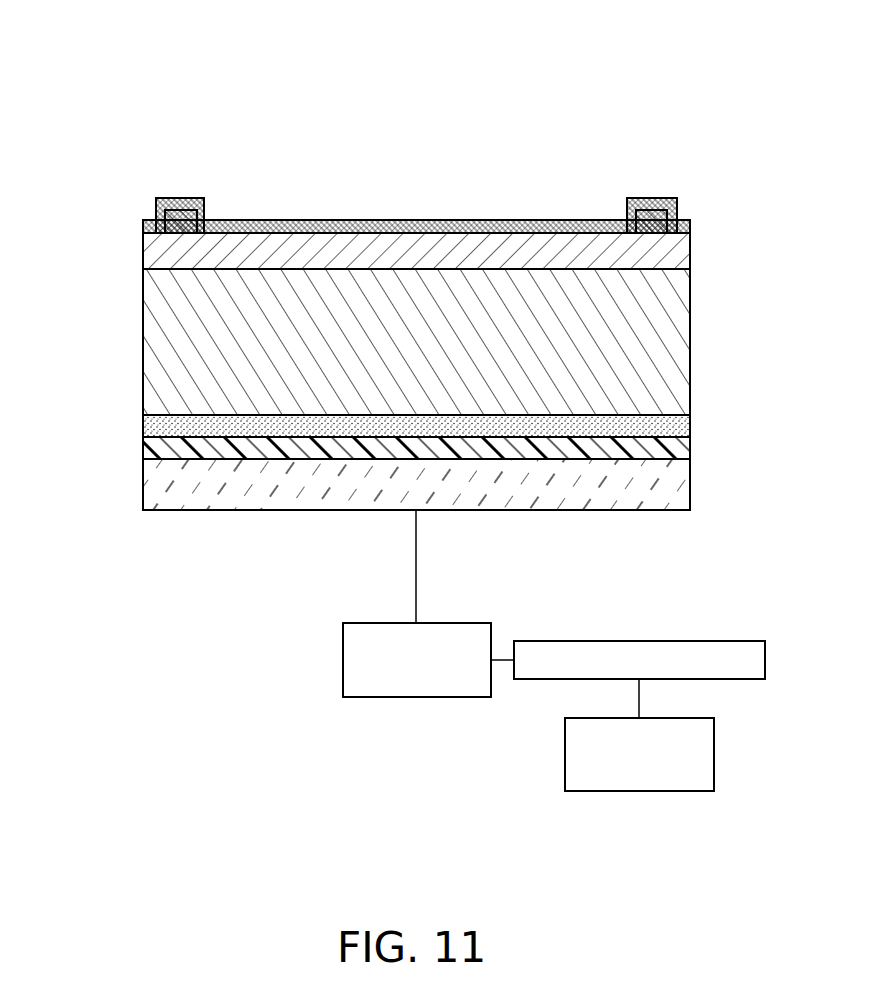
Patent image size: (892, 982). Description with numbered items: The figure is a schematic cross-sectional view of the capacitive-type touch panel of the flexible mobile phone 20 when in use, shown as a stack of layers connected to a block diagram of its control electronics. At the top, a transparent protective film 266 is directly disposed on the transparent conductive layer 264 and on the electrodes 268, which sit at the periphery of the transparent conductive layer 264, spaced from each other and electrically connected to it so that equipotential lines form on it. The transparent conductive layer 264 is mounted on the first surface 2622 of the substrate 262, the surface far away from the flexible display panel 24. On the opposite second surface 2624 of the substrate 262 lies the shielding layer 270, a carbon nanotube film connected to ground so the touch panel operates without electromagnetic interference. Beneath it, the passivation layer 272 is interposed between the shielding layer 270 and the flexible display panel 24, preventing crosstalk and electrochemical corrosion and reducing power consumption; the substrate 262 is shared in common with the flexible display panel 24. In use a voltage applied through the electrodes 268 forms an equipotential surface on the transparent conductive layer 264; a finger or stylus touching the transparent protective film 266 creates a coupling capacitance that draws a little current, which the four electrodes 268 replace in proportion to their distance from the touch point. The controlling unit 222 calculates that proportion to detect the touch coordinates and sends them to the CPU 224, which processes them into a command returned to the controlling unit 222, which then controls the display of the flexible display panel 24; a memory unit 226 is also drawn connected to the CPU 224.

The flexible mobile phone 20 is at (450, 35).
The electrodes 268 is at (173, 198).
The transparent protective film 266 is at (294, 220).
The transparent conductive layer 264 is at (677, 250).
The first surface 2622 is at (213, 270).
The second surface 2624 is at (223, 410).
The substrate 262 is at (672, 357).
The shielding layer 270 is at (147, 424).
The passivation layer 272 is at (148, 438).
The flexible display panel 24 is at (264, 473).
The controlling unit 222 is at (445, 623).
The CPU 224 is at (639, 641).
The memory unit 226 is at (715, 753).